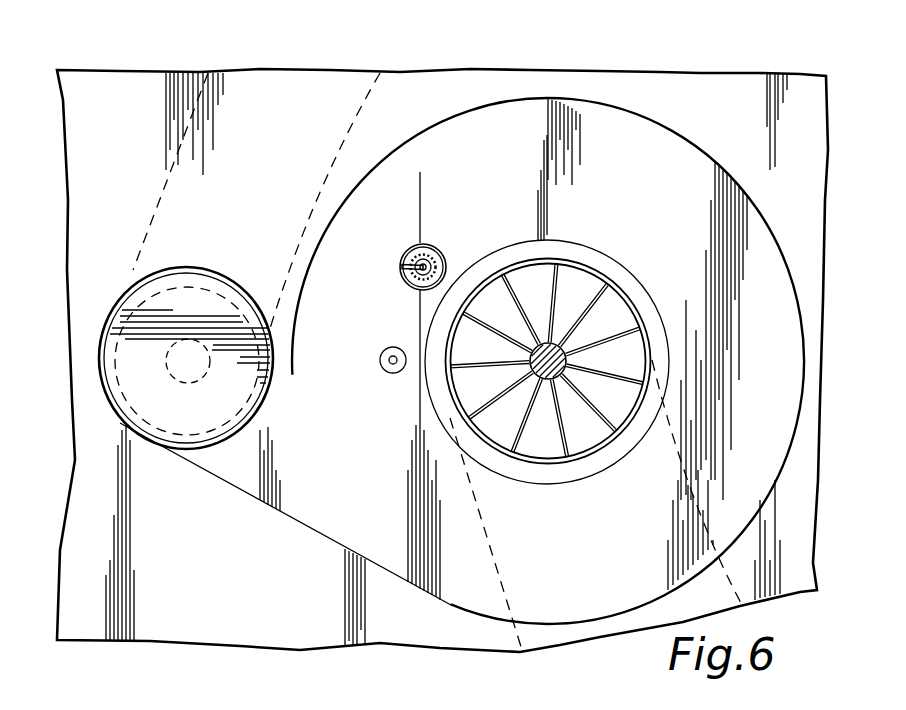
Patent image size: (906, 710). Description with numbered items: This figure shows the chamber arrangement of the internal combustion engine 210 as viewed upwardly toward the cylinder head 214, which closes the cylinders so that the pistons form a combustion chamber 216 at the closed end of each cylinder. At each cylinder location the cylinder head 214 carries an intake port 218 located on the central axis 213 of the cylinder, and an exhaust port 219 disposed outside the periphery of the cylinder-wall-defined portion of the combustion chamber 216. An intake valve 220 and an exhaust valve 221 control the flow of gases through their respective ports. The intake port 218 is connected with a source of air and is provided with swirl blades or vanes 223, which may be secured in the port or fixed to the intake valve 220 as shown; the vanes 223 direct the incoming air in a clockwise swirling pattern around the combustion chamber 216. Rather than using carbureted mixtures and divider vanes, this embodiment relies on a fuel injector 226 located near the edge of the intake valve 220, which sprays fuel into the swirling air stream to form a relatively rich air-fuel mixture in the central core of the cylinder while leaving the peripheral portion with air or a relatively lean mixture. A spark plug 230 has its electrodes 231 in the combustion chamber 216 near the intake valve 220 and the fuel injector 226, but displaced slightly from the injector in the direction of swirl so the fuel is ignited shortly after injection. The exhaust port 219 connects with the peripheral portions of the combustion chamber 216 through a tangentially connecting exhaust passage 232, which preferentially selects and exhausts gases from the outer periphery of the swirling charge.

The internal combustion engine 210 is at (789, 68).
The cylinder axis 213 is at (566, 344).
The cylinder head 214 is at (673, 82).
The combustion chamber 216 is at (552, 112).
The intake port 218 is at (538, 259).
The exhaust port 219 is at (164, 194).
The intake valve 220 is at (568, 372).
The exhaust valve 221 is at (220, 297).
The swirl blades or vanes 223 is at (483, 427).
The fuel injector 226 is at (390, 372).
The spark plug 230 is at (423, 243).
The electrodes 231 is at (432, 262).
The exhaust passage 232 is at (220, 466).